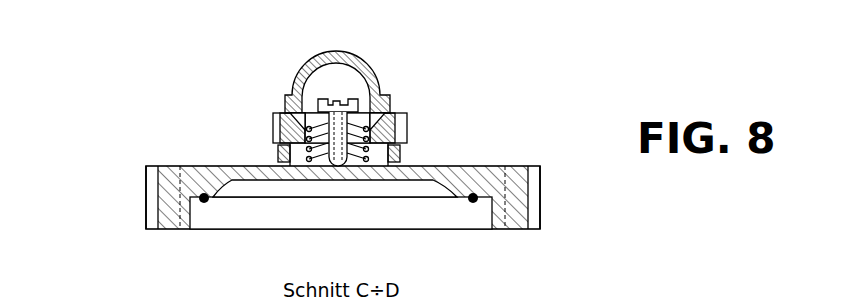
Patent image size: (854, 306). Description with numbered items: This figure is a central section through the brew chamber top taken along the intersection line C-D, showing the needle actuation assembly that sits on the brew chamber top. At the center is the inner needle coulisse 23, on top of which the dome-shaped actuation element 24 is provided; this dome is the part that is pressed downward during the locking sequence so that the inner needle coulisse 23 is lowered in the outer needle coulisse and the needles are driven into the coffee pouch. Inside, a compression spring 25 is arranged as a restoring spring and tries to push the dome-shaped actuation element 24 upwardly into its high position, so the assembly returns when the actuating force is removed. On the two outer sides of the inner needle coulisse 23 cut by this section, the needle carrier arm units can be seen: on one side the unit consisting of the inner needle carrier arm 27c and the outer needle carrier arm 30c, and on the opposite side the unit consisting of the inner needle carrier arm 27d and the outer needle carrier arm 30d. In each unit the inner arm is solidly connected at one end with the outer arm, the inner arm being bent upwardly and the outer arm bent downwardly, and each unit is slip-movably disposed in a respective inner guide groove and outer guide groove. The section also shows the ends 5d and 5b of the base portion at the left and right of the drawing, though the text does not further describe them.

The base plate end 5b is at (534, 168).
The base plate end 5d is at (151, 167).
The inner needle coulisse 23 is at (287, 112).
The dome-shaped actuation element 24 is at (367, 63).
The compression spring 25 is at (314, 166).
The inner needle carrier arm 27c is at (283, 125).
The inner needle carrier arm 27d is at (400, 116).
The outer needle carrier arm 30c is at (277, 149).
The outer needle carrier arm 30d is at (403, 150).